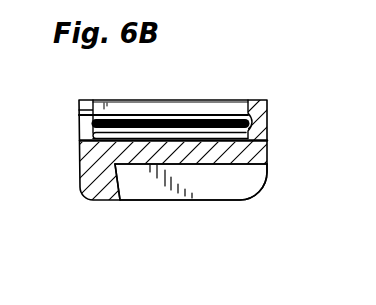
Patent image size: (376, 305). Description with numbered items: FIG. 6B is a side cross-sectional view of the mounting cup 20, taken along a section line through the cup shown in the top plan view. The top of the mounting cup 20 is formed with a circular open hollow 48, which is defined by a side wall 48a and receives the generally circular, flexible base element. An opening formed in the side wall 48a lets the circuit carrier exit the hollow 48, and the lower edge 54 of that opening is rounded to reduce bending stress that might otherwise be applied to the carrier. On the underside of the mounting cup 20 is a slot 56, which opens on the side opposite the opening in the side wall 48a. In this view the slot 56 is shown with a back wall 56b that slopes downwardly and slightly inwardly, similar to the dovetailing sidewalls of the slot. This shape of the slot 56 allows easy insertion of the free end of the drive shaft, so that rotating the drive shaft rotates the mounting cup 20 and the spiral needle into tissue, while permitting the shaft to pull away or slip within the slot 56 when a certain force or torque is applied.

The mounting cup 20 is at (267, 147).
The hollow 48 is at (159, 108).
The side wall 48a is at (252, 118).
The lower edge 54 is at (79, 134).
The slot 56 is at (222, 176).
The back wall 56b is at (113, 169).